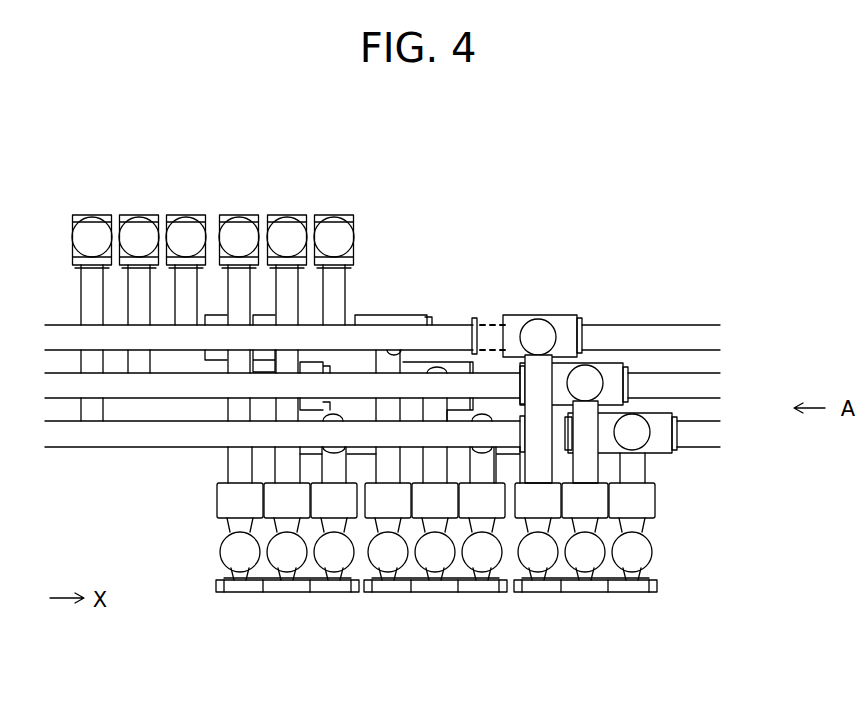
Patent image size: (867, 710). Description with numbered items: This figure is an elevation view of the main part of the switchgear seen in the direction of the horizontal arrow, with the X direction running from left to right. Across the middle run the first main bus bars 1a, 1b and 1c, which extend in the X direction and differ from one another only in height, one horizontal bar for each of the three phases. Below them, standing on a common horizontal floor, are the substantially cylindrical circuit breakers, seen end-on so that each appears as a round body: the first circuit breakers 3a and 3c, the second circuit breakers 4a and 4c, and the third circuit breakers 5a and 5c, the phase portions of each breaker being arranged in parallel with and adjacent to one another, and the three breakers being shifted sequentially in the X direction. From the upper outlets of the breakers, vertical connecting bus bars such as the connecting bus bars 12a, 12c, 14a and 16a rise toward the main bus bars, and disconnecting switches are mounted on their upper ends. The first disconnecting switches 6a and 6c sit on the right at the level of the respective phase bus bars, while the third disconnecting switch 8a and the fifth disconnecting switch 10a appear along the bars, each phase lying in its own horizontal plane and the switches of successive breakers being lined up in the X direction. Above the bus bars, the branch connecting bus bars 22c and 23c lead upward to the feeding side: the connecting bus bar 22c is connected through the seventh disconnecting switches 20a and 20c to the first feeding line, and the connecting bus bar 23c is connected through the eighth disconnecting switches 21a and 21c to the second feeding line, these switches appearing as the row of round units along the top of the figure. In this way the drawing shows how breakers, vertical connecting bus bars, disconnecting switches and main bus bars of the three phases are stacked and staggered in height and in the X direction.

The first main bus bar 1a is at (705, 328).
The first main bus bar 1b is at (705, 378).
The first main bus bar 1c is at (705, 428).
The first circuit breaker 3a is at (538, 553).
The first circuit breaker 3c is at (632, 553).
The second circuit breaker 4a is at (388, 553).
The second circuit breaker 4c is at (482, 553).
The third circuit breaker 5a is at (240, 553).
The third circuit breaker 5c is at (334, 553).
The first disconnecting switch 6a is at (566, 320).
The first disconnecting switch 6c is at (660, 420).
The third disconnecting switch 8a is at (427, 320).
The fifth disconnecting switch 10a is at (262, 322).
The connecting bus bar 12a is at (540, 460).
The connecting bus bar 12c is at (640, 466).
The connecting bus bar 14a is at (390, 460).
The connecting bus bar 16a is at (238, 470).
The seventh disconnecting switch 20a is at (332, 235).
The seventh disconnecting switch 20c is at (242, 233).
The eighth disconnecting switch 21a is at (180, 233).
The eighth disconnecting switch 21c is at (92, 233).
The connecting bus bar 22c is at (238, 300).
The connecting bus bar 23c is at (88, 300).